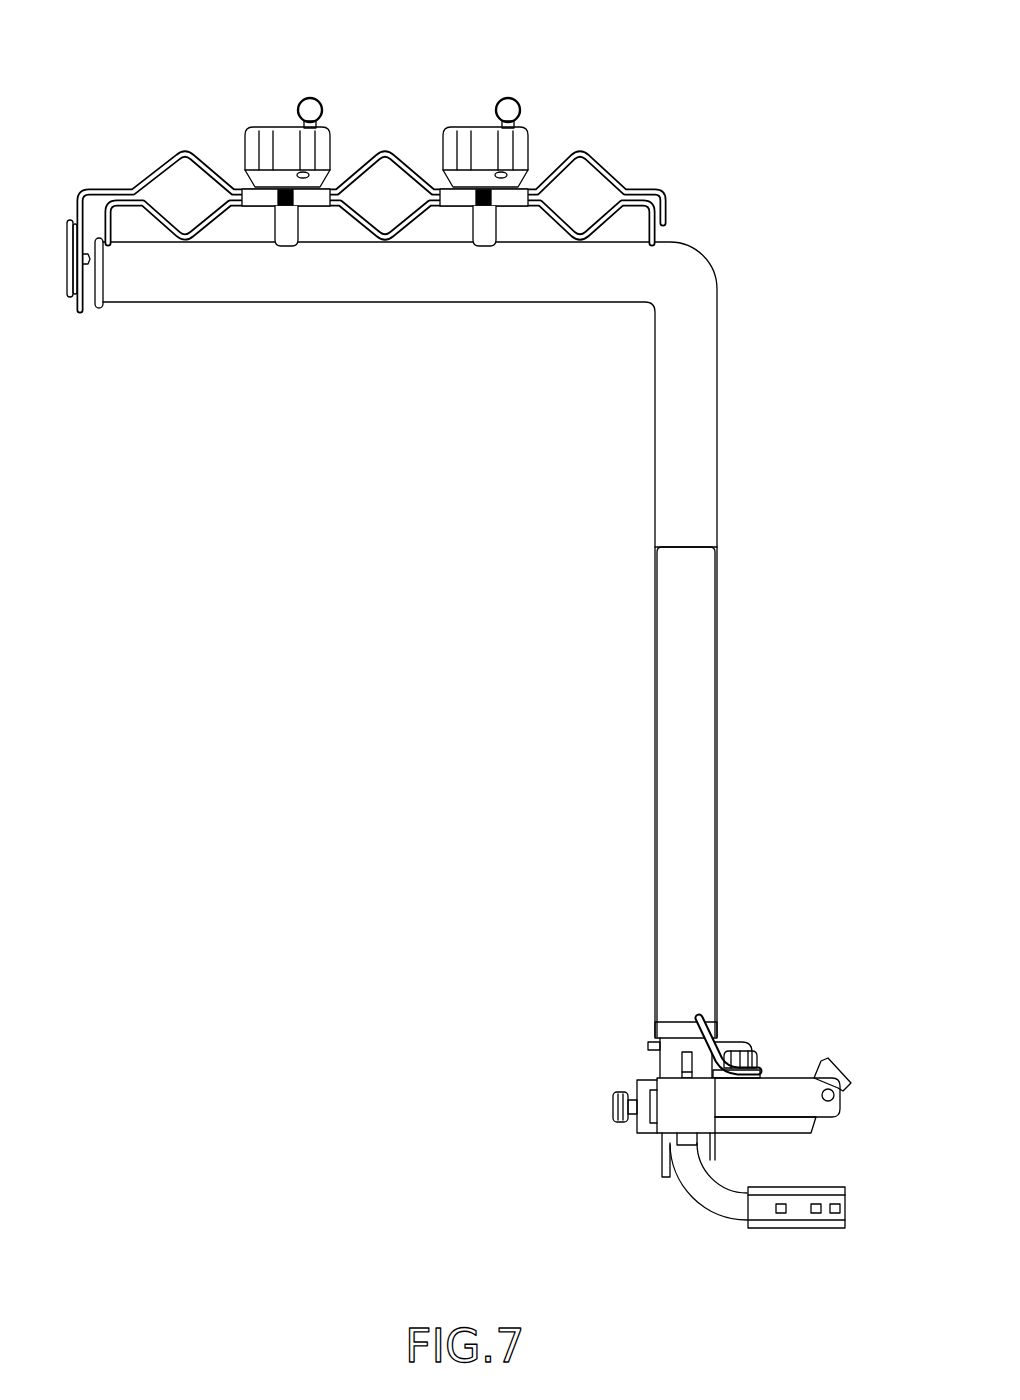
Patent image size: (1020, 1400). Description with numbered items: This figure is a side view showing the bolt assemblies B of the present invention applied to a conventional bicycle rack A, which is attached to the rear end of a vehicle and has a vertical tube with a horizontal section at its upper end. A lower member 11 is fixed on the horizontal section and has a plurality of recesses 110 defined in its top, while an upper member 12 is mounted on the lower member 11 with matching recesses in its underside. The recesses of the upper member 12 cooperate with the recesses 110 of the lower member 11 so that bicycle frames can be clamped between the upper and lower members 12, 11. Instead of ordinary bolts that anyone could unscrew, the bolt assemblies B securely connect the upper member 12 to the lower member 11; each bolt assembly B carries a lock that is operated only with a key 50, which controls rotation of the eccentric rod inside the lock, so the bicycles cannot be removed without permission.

The lower member 11 is at (200, 240).
The upper member 12 is at (106, 185).
The recesses 110 is at (592, 198).
The key 50 is at (305, 100).
The bicycle rack A is at (757, 215).
The bolt assembly B is at (347, 113).